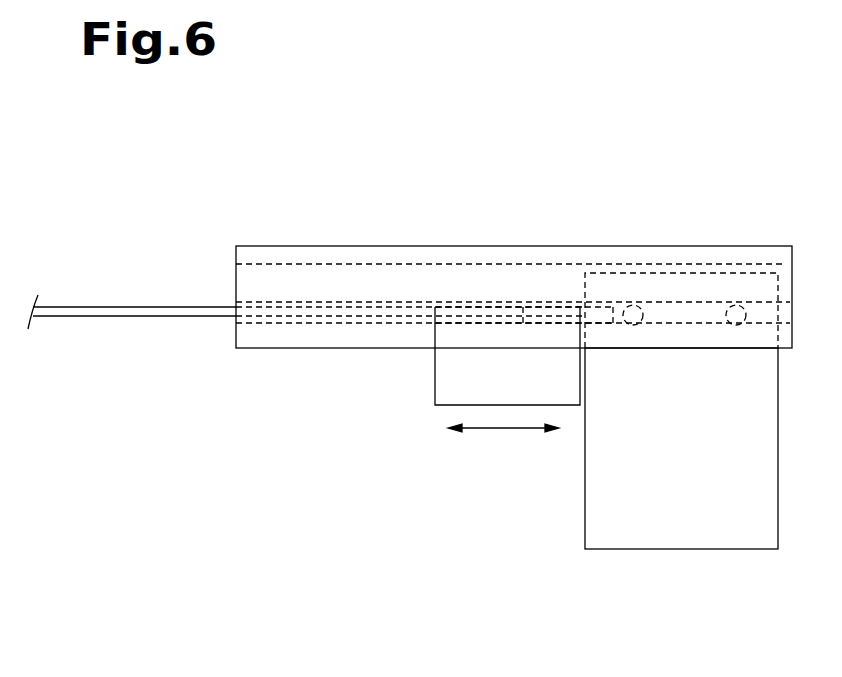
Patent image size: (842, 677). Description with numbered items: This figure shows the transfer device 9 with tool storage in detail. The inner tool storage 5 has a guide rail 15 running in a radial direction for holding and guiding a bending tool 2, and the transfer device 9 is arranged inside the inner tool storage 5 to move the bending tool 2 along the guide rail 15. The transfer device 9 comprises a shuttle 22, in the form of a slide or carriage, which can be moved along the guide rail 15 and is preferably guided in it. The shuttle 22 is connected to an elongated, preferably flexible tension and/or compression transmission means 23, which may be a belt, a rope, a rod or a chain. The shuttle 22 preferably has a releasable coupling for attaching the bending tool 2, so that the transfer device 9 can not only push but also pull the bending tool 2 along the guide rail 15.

The bending tool 2 is at (710, 463).
The inner tool storage 5 is at (508, 232).
The transfer device 9 is at (310, 379).
The guide rail 15 is at (421, 261).
The shuttle 22 is at (515, 386).
The tension and/or compression transmission means 23 is at (136, 316).